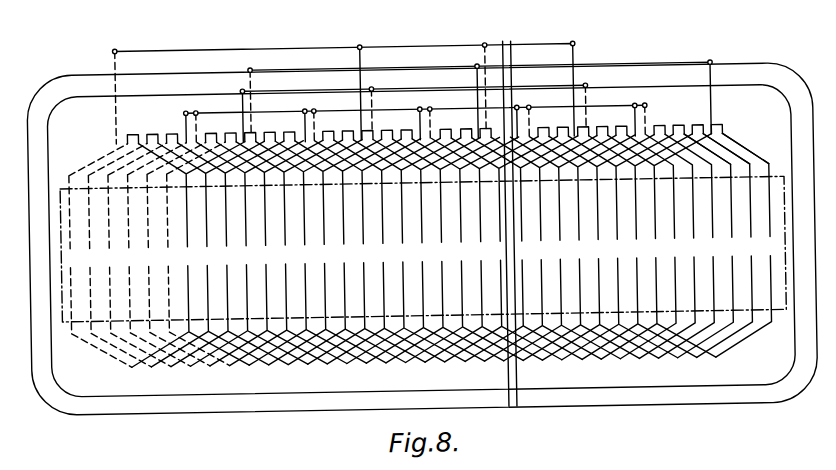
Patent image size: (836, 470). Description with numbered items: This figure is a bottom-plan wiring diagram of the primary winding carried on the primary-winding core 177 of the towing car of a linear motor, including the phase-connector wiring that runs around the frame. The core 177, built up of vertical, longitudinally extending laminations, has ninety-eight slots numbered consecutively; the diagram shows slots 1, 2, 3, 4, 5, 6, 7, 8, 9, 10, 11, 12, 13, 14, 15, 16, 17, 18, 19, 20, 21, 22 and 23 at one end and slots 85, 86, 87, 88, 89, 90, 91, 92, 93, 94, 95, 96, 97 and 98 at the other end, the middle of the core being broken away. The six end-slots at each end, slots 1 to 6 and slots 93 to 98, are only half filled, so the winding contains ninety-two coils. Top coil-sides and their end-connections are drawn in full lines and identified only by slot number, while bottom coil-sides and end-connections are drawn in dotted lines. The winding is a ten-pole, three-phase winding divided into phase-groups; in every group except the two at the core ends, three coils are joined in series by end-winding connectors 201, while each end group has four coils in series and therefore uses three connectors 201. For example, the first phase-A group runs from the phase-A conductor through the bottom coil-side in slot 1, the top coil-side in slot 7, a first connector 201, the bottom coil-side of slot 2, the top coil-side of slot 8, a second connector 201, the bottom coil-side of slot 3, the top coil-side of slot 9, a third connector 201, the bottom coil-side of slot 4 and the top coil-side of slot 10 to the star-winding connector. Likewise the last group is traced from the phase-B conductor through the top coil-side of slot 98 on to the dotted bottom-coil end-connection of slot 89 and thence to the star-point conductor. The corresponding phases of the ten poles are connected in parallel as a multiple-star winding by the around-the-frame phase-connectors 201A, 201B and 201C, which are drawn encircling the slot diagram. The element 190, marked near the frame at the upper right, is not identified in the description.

The end-winding connector 201 is at (173, 136).
The phase-connector 201A is at (293, 51).
The phase-connector 201B is at (293, 72).
The phase-connector 201C is at (293, 93).
The armature winding 190 is at (769, 135).
The primary-winding core 177 is at (777, 190).
The slot 1 is at (98, 256).
The slot 2 is at (118, 255).
The slot 3 is at (137, 255).
The slot 4 is at (157, 255).
The slot 5 is at (176, 254).
The slot 6 is at (196, 254).
The slot 7 is at (188, 255).
The slot 8 is at (208, 254).
The slot 9 is at (227, 254).
The slot 10 is at (247, 254).
The slot 11 is at (266, 253).
The slot 12 is at (286, 253).
The slot 13 is at (305, 253).
The slot 14 is at (325, 252).
The slot 15 is at (344, 252).
The slot 16 is at (364, 252).
The slot 17 is at (383, 251).
The slot 18 is at (404, 251).
The slot 19 is at (423, 251).
The slot 20 is at (443, 250).
The slot 21 is at (462, 250).
The slot 22 is at (481, 250).
The slot 23 is at (501, 249).
The slot 85 is at (521, 249).
The slot 86 is at (541, 249).
The slot 87 is at (560, 247).
The slot 88 is at (579, 247).
The slot 89 is at (599, 247).
The slot 90 is at (618, 246).
The slot 91 is at (637, 246).
The slot 92 is at (656, 246).
The slot 93 is at (650, 246).
The slot 94 is at (670, 246).
The slot 95 is at (689, 245).
The slot 96 is at (708, 245).
The slot 97 is at (727, 245).
The slot 98 is at (746, 244).